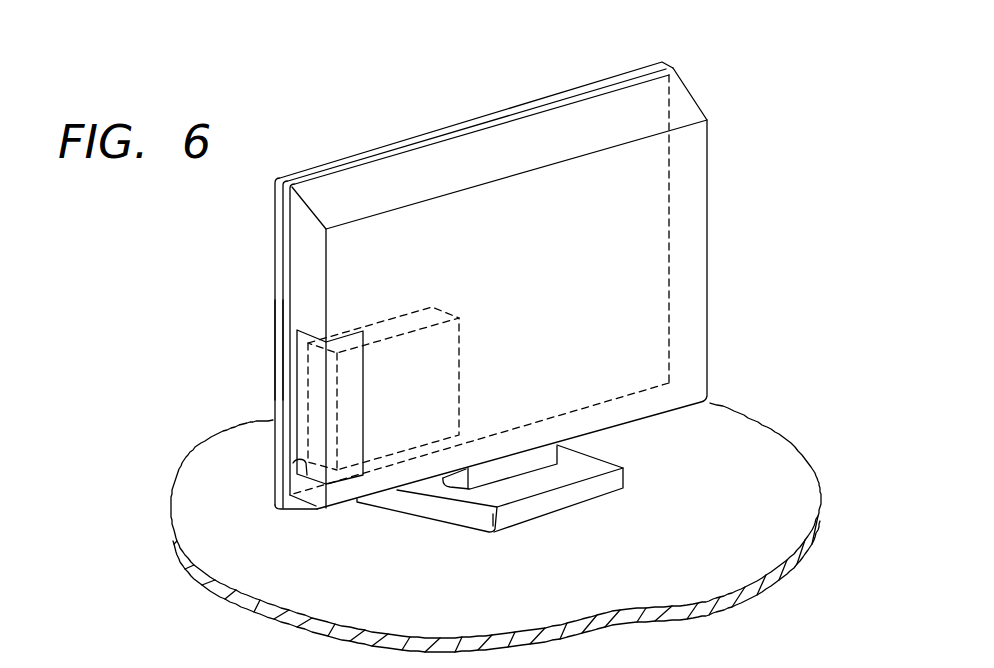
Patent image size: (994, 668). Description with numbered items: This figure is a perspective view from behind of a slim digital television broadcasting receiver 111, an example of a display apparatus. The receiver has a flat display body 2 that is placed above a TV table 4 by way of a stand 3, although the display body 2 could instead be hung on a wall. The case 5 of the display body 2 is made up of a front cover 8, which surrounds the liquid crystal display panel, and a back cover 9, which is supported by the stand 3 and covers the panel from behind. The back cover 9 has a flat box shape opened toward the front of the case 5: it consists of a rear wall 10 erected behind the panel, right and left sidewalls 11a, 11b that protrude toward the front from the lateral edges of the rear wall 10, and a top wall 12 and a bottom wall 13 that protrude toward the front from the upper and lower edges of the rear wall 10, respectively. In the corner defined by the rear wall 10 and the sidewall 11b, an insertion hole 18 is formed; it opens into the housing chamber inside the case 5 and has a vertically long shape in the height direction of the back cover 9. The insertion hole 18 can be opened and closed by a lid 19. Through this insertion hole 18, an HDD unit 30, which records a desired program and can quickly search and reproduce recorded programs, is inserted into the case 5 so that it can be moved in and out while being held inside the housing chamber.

The digital television broadcasting receiver 111 is at (704, 98).
The display body 2 is at (712, 222).
The top wall 12 is at (483, 146).
The case 5 is at (226, 213).
The front cover 8 is at (278, 224).
The back cover 9 is at (302, 264).
The left sidewall 11b is at (300, 302).
The right sidewall 11a is at (698, 263).
The rear wall 10 is at (658, 316).
The bottom wall 13 is at (678, 396).
The lid 19 is at (315, 373).
The insertion hole 18 is at (293, 463).
The HDD unit 30 is at (441, 356).
The stand 3 is at (623, 481).
The TV table 4 is at (802, 470).